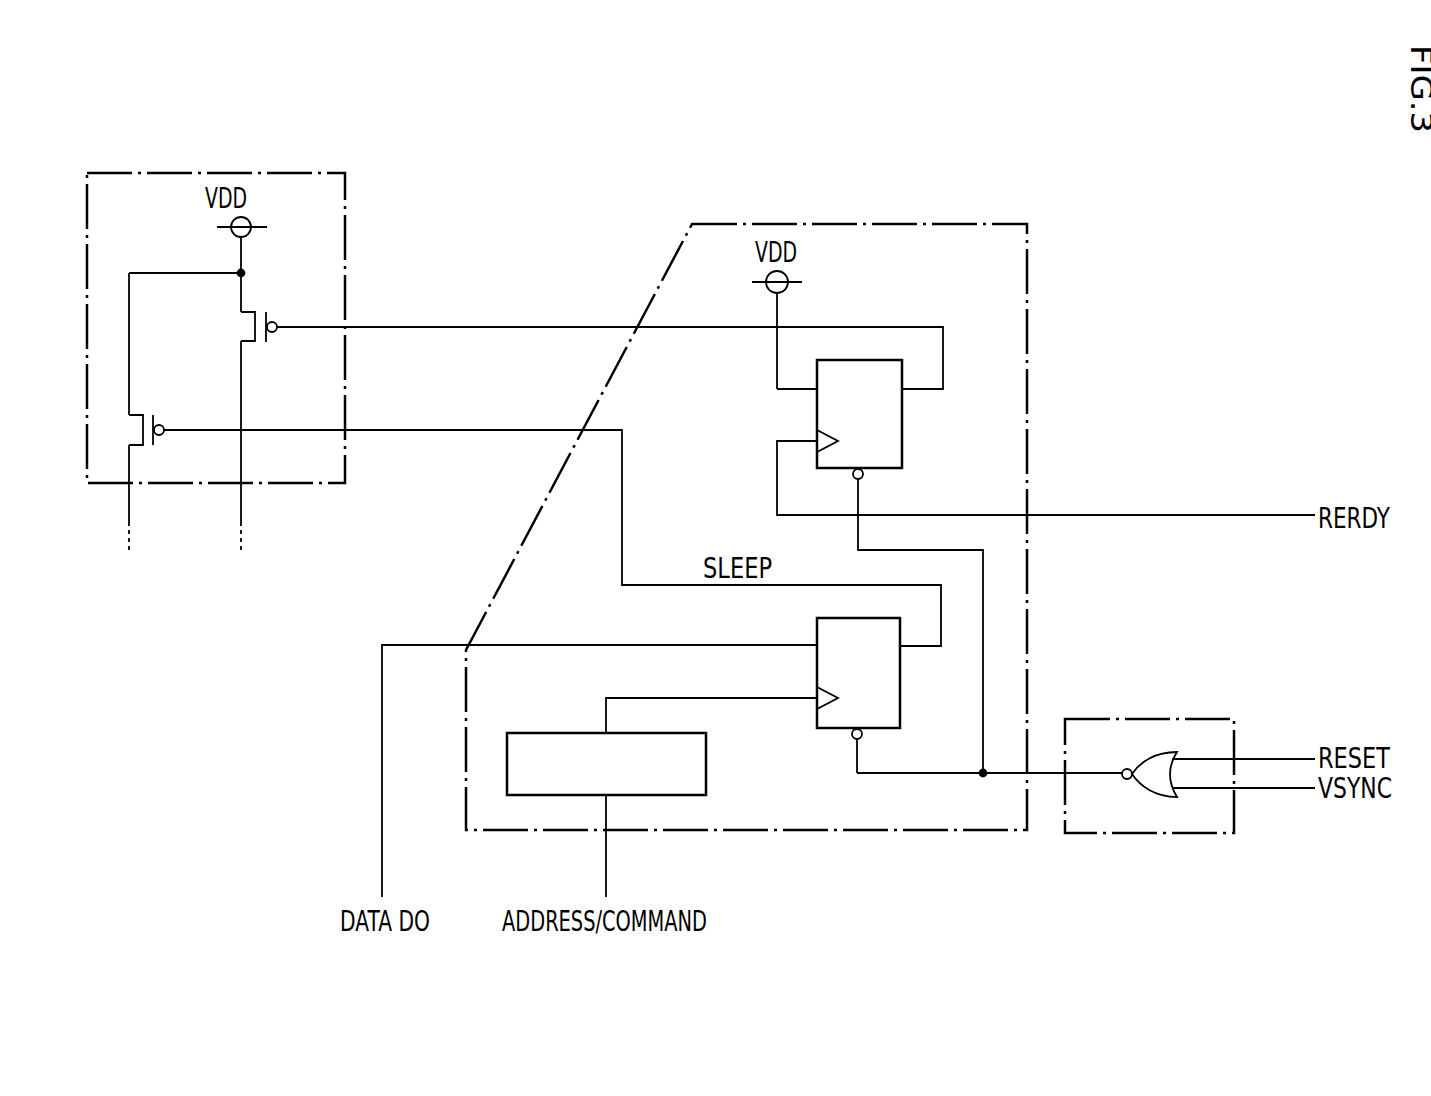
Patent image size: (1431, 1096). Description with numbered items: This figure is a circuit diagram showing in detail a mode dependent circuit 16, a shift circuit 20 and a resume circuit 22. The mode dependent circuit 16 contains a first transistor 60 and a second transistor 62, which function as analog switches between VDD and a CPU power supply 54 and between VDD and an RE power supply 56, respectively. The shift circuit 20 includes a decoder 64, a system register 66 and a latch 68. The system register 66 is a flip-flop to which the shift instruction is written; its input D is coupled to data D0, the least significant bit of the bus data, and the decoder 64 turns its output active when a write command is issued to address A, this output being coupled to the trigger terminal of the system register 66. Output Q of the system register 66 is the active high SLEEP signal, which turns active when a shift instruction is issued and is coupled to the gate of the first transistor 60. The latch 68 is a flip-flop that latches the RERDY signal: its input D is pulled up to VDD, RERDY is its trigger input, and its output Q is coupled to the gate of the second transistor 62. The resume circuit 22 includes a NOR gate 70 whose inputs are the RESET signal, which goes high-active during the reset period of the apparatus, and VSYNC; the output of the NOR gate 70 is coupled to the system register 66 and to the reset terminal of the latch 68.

The mode dependent circuit 16 is at (215, 173).
The shift circuit 20 is at (864, 224).
The resume circuit 22 is at (1150, 720).
The CPU power supply 54 is at (127, 534).
The RE power supply 56 is at (238, 534).
The first transistor 60 is at (160, 422).
The second transistor 62 is at (272, 320).
The decoder 64 is at (706, 760).
The system register 66 is at (900, 695).
The latch 68 is at (902, 437).
The NOR gate 70 is at (1160, 752).